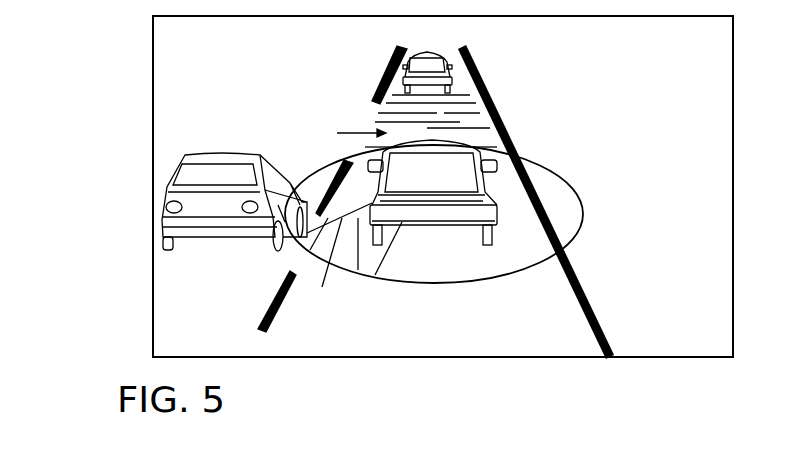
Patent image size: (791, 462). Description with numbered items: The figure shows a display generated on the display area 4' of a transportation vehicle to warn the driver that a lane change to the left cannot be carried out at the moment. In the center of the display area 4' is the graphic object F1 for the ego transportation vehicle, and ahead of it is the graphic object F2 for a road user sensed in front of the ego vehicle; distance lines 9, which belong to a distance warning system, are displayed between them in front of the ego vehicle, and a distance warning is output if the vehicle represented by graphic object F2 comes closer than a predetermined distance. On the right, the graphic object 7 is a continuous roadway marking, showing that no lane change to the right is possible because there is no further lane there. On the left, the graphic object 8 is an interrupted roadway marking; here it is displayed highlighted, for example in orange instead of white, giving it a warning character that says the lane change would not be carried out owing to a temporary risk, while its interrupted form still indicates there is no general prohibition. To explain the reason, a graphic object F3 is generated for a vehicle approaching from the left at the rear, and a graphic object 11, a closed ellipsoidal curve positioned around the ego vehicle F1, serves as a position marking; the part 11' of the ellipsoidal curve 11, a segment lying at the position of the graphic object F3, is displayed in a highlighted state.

The display area 4' is at (409, 186).
The graphic object (continuous roadway marking) 7 is at (598, 315).
The graphic object (interrupted roadway marking) 8 is at (380, 80).
The distance lines 9 is at (351, 133).
The graphic object (position marking) 11 is at (453, 212).
The part of the ellipsoidal curve 11' is at (330, 246).
The graphic object for the ego transportation vehicle F1 is at (495, 222).
The graphic object for the transportation vehicle sensed in front F2 is at (452, 80).
The graphic object for the transportation vehicle approaching from the left at the r F3 is at (208, 163).